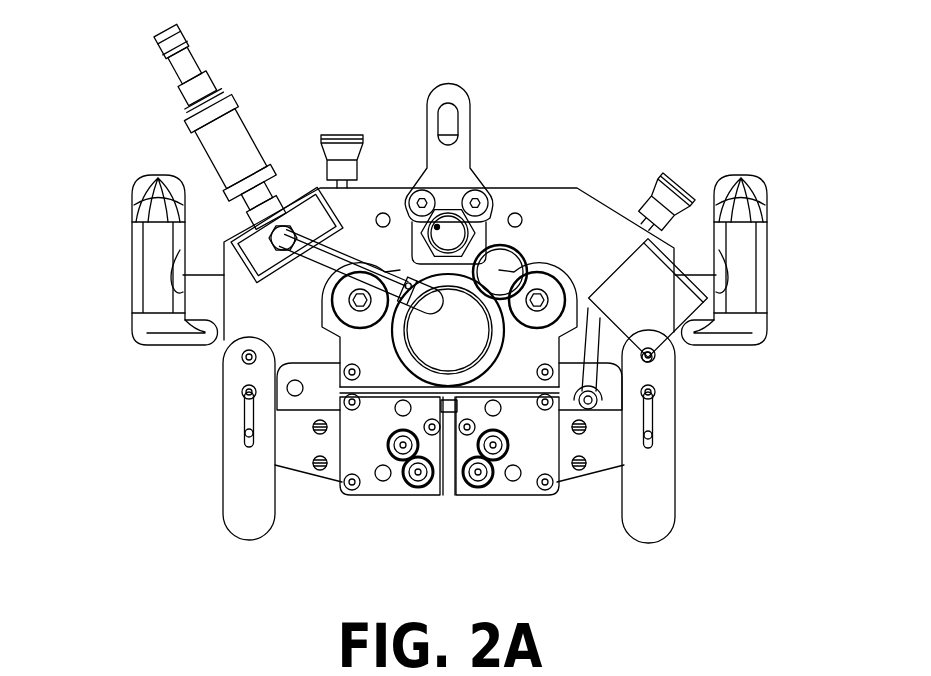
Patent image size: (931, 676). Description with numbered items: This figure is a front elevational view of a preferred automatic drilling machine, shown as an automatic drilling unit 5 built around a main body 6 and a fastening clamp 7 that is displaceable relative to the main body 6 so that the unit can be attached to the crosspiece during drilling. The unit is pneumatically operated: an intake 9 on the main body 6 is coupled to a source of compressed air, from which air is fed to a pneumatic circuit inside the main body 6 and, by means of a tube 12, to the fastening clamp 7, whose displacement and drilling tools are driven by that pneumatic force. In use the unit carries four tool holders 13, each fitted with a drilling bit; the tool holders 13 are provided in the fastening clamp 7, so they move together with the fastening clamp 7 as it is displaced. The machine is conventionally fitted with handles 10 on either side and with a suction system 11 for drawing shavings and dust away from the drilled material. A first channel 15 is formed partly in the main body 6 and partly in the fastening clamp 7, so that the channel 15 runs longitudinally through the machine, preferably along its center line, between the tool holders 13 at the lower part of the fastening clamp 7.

The automatic drilling unit 5 is at (597, 116).
The main body 6 is at (533, 205).
The fastening clamp 7 is at (372, 343).
The intake 9 is at (216, 118).
The handles 10 is at (152, 249).
The suction system 11 is at (650, 317).
The tube 12 is at (355, 262).
The tool holders 13 is at (410, 483).
The first channel 15 is at (450, 474).